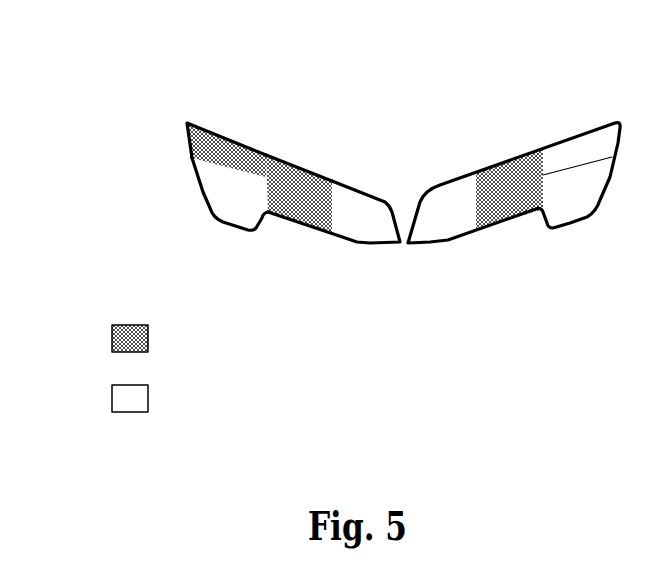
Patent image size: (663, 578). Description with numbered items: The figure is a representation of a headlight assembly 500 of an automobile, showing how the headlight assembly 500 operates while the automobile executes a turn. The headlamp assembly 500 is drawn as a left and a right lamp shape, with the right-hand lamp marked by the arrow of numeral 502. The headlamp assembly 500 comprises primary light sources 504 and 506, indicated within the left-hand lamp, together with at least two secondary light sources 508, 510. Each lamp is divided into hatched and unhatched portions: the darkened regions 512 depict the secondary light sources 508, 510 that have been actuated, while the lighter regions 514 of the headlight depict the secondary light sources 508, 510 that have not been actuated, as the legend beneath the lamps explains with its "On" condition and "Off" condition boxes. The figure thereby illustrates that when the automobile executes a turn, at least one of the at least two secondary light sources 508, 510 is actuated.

The headlight assembly 500 is at (331, 133).
The right display panel 502 is at (476, 116).
The primary light source 504 is at (362, 210).
The primary light source 506 is at (301, 186).
The secondary light source 508 is at (213, 147).
The secondary light source 510 is at (225, 193).
The darkened regions 512 is at (251, 338).
The lighter regions 514 is at (252, 396).